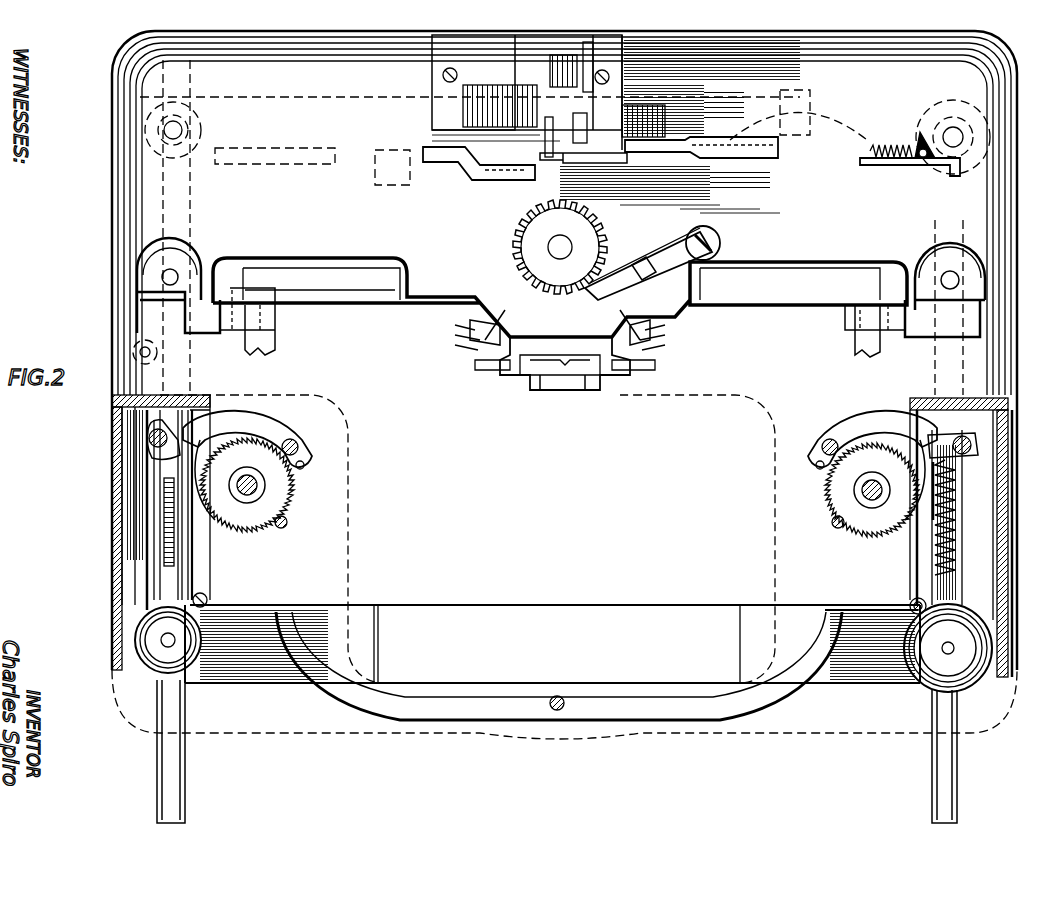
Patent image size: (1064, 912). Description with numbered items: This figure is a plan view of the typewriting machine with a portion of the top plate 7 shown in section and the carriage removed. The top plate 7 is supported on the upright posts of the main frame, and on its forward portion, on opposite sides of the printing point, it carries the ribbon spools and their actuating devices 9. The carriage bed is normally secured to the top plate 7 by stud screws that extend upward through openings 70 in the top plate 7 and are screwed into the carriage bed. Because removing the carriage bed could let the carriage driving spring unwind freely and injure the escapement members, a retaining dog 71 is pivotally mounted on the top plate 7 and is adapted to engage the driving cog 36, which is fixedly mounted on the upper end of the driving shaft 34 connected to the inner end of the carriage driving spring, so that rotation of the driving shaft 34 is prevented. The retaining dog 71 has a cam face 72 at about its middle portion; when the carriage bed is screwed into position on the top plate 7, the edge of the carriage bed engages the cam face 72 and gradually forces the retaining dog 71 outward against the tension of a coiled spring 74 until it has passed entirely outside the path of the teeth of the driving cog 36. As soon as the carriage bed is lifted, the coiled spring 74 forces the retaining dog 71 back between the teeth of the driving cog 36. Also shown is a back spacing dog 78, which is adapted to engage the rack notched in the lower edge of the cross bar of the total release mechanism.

The top plate 7 is at (564, 385).
The actuating devices 9 is at (242, 430).
The driving shaft 34 is at (542, 247).
The driving cog 36 is at (559, 245).
The openings 70 is at (166, 277).
The retaining dog 71 is at (617, 276).
The cam face 72 is at (644, 258).
The coiled spring 74 is at (698, 236).
The back spacing dog 78 is at (510, 182).